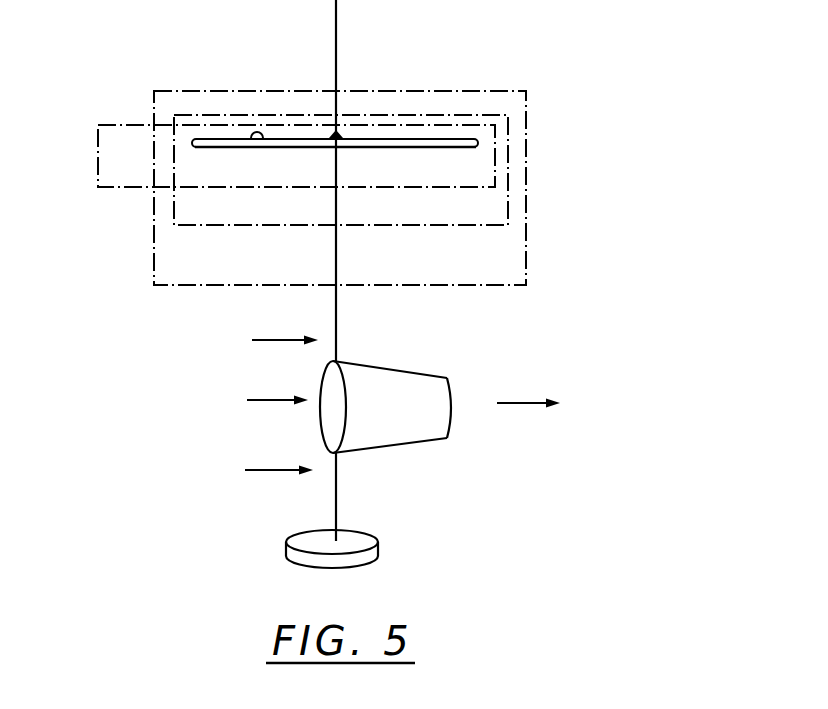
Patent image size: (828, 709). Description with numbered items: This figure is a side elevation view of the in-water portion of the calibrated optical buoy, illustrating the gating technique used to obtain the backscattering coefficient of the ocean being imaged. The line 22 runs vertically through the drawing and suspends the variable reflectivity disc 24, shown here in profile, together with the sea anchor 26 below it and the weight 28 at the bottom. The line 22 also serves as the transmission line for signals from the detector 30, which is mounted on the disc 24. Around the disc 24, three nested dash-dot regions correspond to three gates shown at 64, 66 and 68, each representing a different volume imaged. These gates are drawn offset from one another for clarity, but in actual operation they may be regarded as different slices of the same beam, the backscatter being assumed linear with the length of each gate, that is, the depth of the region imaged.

The line 22 is at (337, 55).
The variable reflectivity disc 24 is at (470, 150).
The sea anchor 26 is at (420, 445).
The weight 28 is at (294, 533).
The detector 30 is at (256, 133).
The gate region 64 is at (135, 190).
The gate region 66 is at (490, 234).
The gate region 68 is at (478, 294).